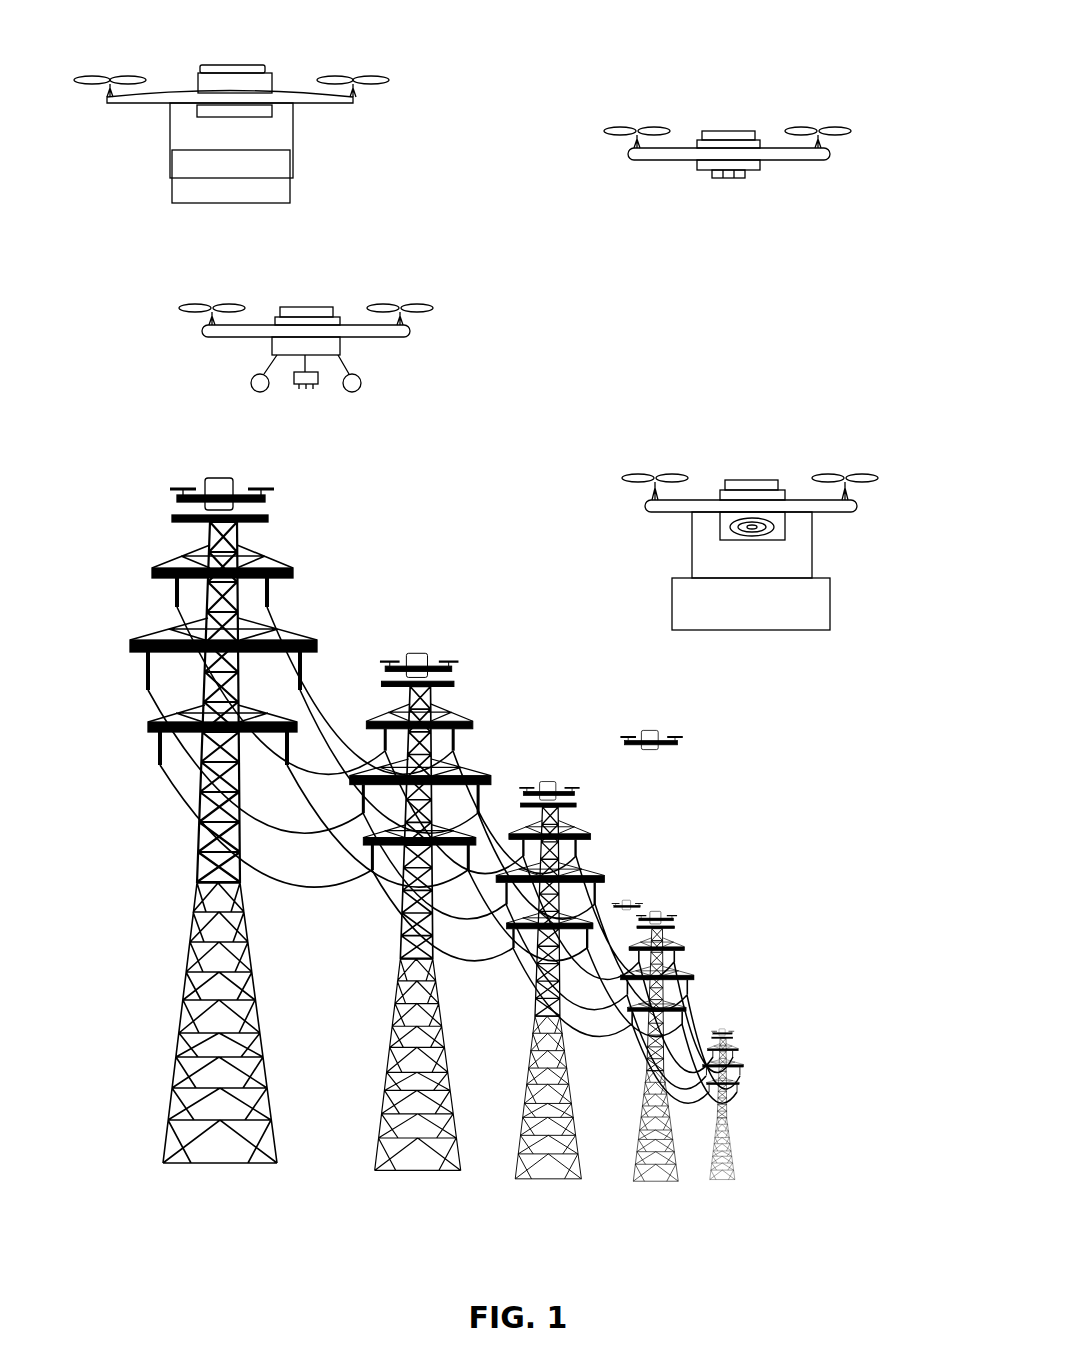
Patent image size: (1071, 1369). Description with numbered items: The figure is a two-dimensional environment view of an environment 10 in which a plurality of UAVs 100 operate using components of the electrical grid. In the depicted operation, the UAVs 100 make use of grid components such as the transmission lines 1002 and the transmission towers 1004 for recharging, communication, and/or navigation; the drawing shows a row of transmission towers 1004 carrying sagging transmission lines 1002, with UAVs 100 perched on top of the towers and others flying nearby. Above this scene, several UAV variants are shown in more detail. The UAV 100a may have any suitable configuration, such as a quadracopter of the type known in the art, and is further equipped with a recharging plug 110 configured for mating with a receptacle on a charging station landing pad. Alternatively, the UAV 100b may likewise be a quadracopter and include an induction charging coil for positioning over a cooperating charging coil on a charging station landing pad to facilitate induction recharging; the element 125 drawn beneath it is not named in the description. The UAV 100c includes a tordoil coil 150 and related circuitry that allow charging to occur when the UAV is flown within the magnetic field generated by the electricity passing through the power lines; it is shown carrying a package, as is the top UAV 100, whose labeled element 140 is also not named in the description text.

The environment 10 is at (915, 808).
The UAVs 100 is at (242, 65).
The UAV 100a is at (308, 307).
The UAV 100b is at (729, 131).
The UAV 100c is at (742, 480).
The recharging plug 110 is at (330, 378).
The sensor 125 is at (727, 179).
The package coupling 140 is at (272, 112).
The tordoil coil 150 is at (765, 538).
The transmission lines 1002 is at (268, 518).
The transmission towers 1004 is at (277, 1168).